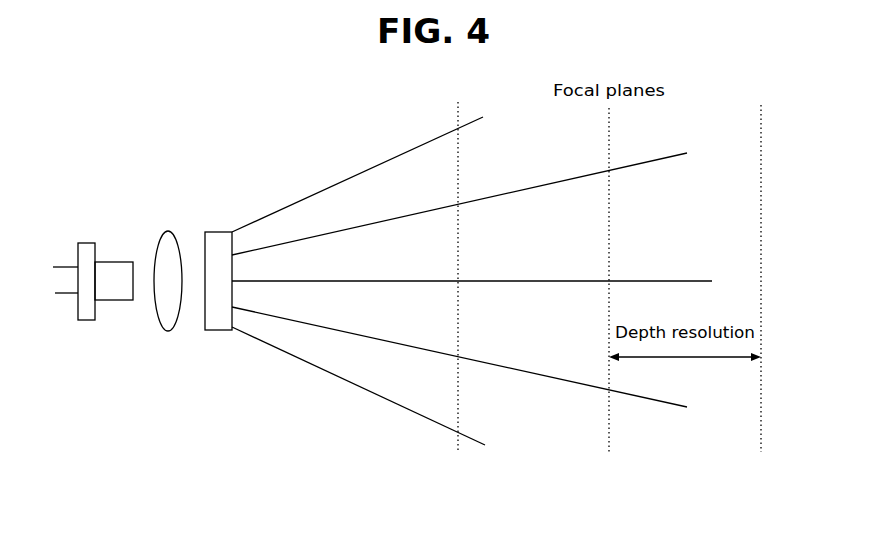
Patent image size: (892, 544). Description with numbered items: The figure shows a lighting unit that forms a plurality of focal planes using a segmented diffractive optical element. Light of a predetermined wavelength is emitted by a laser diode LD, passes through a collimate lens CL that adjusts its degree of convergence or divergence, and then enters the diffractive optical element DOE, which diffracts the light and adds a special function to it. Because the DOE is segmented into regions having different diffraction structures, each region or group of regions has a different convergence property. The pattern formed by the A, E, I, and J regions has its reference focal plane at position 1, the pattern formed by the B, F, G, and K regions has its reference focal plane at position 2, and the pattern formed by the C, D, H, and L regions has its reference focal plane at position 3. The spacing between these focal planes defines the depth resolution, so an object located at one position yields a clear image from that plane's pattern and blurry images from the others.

The laser diode LD is at (93, 264).
The collimate lens CL is at (167, 270).
The diffractive optical element DOE is at (218, 269).
The position 1 is at (457, 304).
The position 2 is at (609, 307).
The position 3 is at (760, 305).